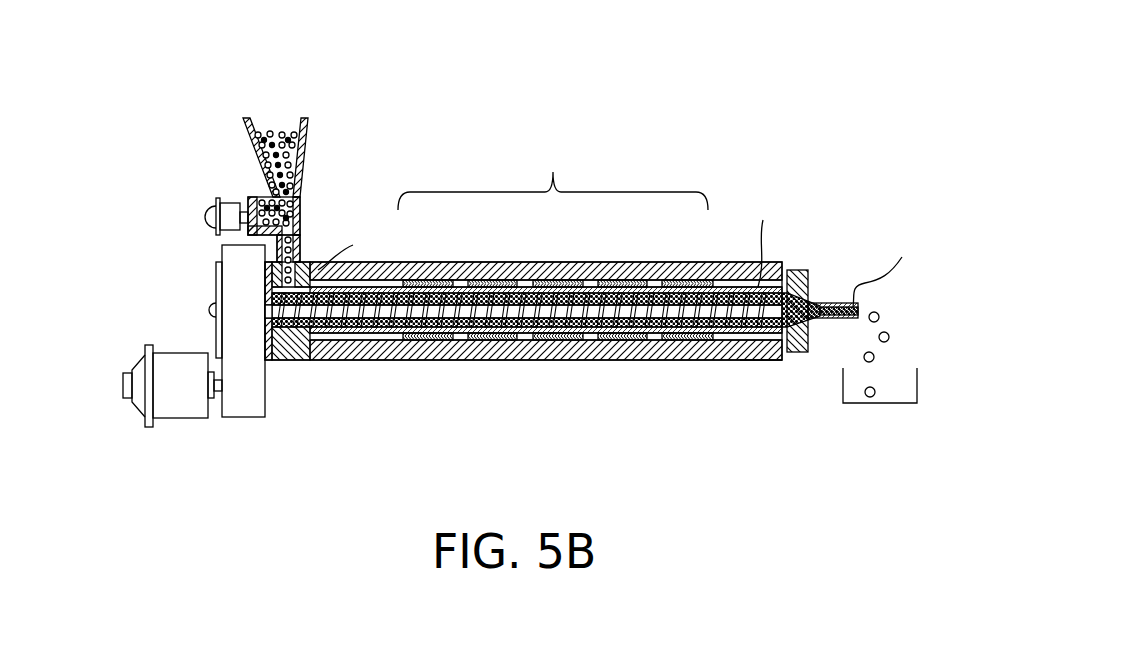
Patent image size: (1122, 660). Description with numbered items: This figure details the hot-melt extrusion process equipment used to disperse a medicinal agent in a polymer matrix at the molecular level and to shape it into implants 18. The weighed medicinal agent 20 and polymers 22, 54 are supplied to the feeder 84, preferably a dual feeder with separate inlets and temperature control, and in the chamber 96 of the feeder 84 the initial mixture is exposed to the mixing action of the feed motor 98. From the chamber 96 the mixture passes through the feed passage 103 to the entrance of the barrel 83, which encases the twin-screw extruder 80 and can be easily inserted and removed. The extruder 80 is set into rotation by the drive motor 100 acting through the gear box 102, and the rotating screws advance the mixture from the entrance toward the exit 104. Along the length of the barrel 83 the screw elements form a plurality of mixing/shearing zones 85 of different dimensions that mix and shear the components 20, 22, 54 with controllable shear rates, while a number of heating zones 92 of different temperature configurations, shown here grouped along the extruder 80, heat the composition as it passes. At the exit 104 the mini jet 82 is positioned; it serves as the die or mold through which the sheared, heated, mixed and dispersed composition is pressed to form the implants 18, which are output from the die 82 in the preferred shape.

The implants 18 is at (880, 315).
The medicinal agent 20 is at (270, 128).
The polymers 22 is at (274, 137).
The PEG 54 is at (292, 137).
The twin-screw extruder 80 is at (430, 155).
The mini jet die 82 is at (817, 277).
The barrel 83 is at (330, 350).
The feeder 84 is at (308, 125).
The mixing/shearing zones 85 is at (568, 310).
The heating zones 92 is at (690, 278).
The chamber 96 is at (257, 238).
The feed motor 98 is at (213, 218).
The drive motor 100 is at (140, 357).
The gear box 102 is at (253, 403).
The feed channel 103 is at (298, 288).
The exit 104 is at (753, 365).